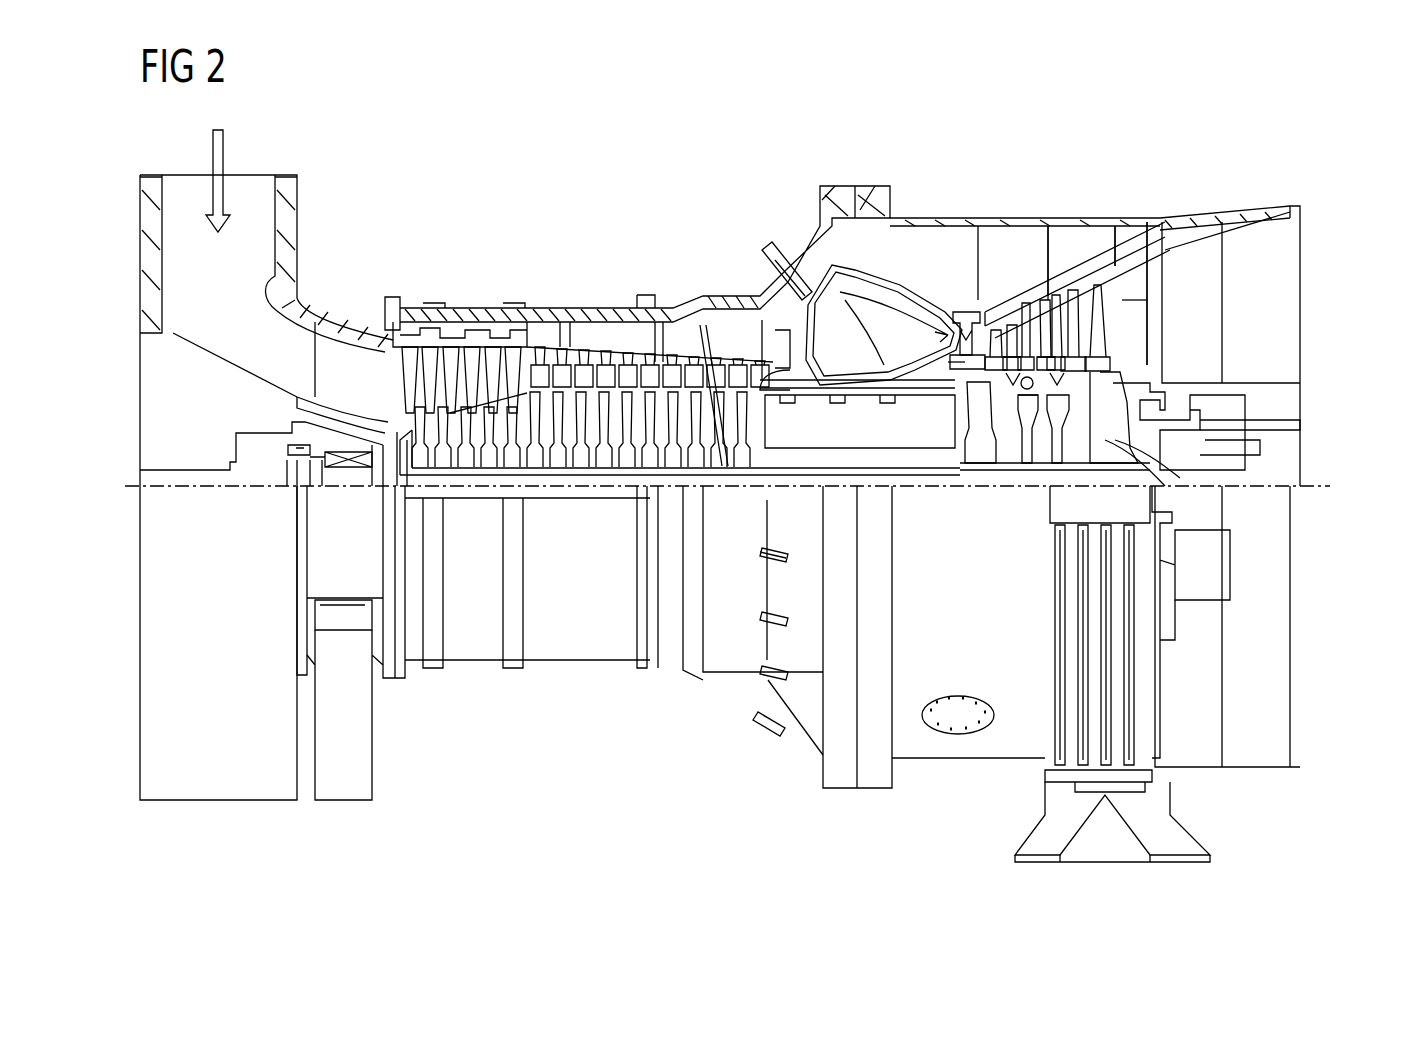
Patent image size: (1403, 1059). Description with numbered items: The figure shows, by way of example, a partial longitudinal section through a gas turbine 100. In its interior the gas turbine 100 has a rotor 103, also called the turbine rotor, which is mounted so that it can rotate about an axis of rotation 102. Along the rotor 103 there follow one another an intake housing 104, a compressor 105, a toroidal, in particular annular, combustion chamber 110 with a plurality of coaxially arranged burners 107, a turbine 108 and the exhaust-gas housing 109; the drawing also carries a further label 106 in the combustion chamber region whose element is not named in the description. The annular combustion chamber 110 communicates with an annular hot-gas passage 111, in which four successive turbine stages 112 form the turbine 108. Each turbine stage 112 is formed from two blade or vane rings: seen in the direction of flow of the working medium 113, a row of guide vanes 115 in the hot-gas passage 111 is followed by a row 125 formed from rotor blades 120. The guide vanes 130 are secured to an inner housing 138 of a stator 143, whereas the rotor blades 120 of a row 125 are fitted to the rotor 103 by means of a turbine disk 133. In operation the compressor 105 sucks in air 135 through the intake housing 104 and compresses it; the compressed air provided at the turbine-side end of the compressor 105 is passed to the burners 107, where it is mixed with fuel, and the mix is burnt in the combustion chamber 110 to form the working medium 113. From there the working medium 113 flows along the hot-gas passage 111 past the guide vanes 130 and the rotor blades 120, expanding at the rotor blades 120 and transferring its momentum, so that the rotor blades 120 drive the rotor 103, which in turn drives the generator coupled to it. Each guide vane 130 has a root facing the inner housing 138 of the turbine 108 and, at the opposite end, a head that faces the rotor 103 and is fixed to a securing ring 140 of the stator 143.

The gas turbine 100 is at (566, 182).
The axis of rotation 102 is at (125, 478).
The rotor 103 is at (790, 442).
The intake housing 104 is at (288, 245).
The compressor 105 is at (487, 290).
The combustion chamber 106 is at (937, 337).
The burner 107 is at (765, 237).
The turbine 108 is at (983, 182).
The exhaust-gas housing 109 is at (1210, 215).
The combustion chamber 110 is at (855, 295).
The hot-gas passage 111 is at (1123, 305).
The turbine stage 112 is at (1110, 182).
The working medium 113 is at (880, 310).
The guide vane 115 is at (1072, 252).
The rotor blade 120 is at (1027, 395).
The row of rotor blades 125 is at (1124, 236).
The guide vane 130 is at (1010, 372).
The turbine disk 133 is at (1105, 440).
The air 135 is at (225, 175).
The inner housing 138 is at (1012, 268).
The securing ring 140 is at (957, 370).
The stator 143 is at (945, 220).